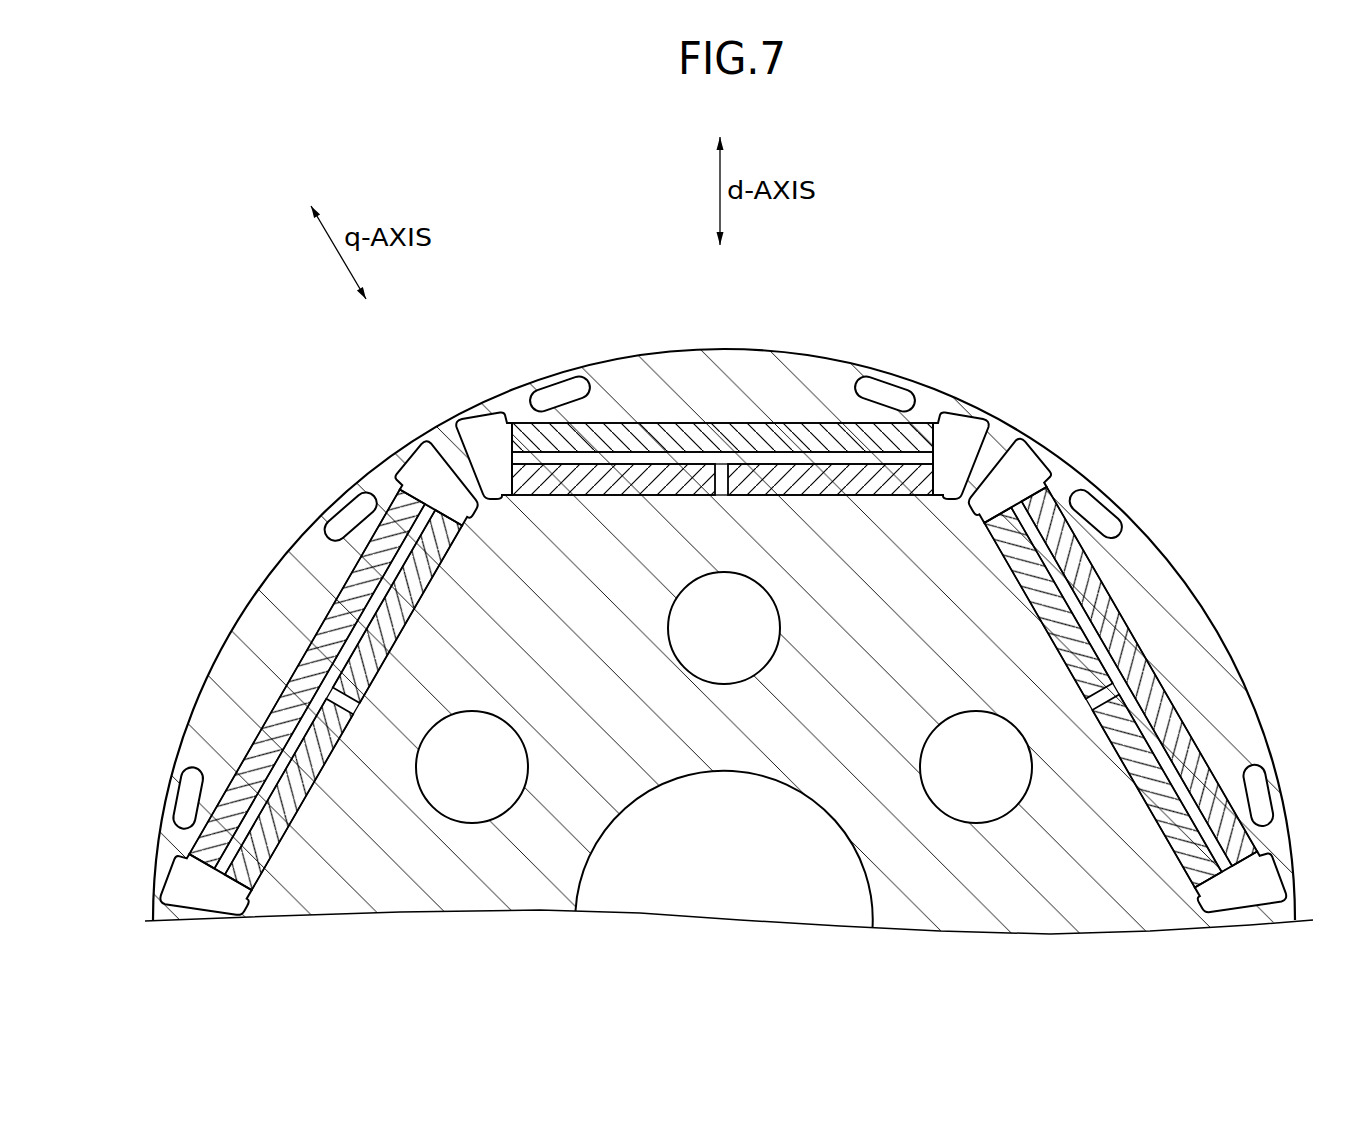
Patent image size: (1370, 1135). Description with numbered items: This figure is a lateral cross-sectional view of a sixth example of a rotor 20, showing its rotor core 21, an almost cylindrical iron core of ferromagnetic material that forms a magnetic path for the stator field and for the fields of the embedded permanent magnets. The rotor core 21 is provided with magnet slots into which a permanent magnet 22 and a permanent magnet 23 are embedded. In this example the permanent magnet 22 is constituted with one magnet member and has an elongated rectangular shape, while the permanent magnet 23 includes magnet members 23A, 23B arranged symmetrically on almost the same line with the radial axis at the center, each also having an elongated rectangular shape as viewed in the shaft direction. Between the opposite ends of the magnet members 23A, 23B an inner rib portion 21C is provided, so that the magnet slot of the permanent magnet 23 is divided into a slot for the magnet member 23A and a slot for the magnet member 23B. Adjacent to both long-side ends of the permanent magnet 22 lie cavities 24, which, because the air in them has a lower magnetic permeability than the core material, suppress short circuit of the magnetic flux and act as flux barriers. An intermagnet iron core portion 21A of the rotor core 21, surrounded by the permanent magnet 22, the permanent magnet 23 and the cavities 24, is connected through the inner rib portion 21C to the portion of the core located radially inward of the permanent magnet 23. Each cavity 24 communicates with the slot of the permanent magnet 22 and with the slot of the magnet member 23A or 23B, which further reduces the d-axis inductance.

The rotor 20 is at (205, 157).
The rotor core 21 is at (873, 375).
The intermagnet iron core portion 21A is at (680, 440).
The inner rib portion 21C is at (733, 590).
The permanent magnet 22 is at (615, 423).
The permanent magnet 23 is at (733, 590).
The magnet member 23A is at (607, 496).
The magnet member 23B is at (576, 692).
The cavity 24 is at (486, 425).